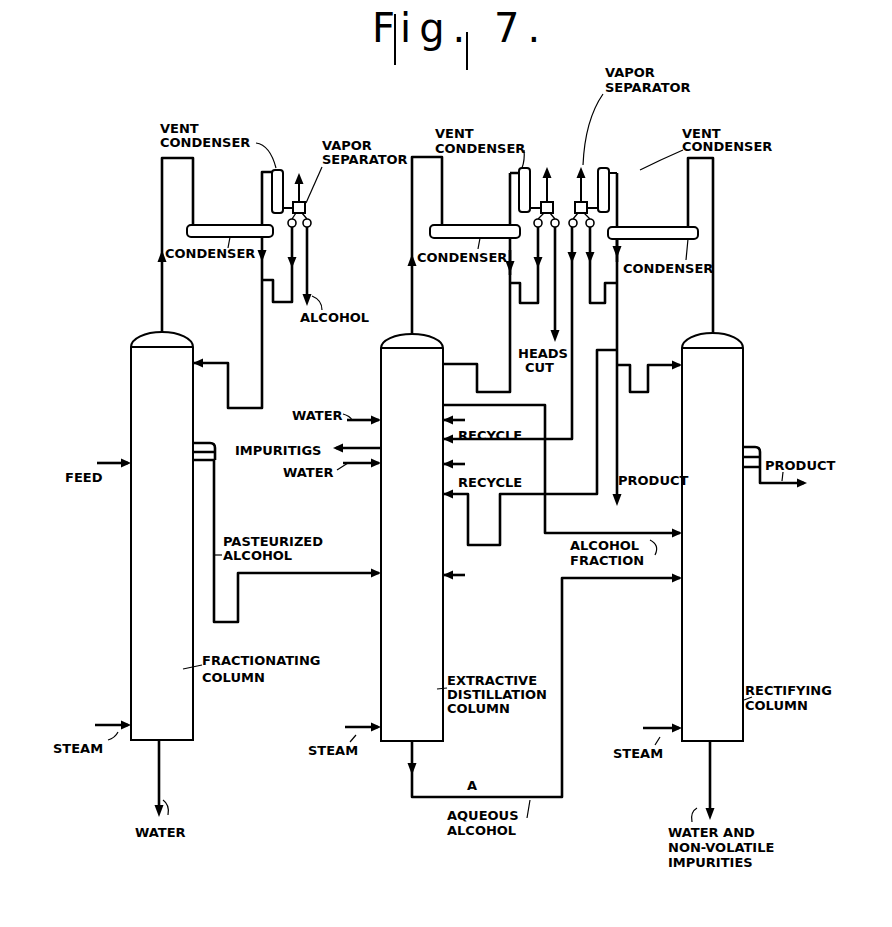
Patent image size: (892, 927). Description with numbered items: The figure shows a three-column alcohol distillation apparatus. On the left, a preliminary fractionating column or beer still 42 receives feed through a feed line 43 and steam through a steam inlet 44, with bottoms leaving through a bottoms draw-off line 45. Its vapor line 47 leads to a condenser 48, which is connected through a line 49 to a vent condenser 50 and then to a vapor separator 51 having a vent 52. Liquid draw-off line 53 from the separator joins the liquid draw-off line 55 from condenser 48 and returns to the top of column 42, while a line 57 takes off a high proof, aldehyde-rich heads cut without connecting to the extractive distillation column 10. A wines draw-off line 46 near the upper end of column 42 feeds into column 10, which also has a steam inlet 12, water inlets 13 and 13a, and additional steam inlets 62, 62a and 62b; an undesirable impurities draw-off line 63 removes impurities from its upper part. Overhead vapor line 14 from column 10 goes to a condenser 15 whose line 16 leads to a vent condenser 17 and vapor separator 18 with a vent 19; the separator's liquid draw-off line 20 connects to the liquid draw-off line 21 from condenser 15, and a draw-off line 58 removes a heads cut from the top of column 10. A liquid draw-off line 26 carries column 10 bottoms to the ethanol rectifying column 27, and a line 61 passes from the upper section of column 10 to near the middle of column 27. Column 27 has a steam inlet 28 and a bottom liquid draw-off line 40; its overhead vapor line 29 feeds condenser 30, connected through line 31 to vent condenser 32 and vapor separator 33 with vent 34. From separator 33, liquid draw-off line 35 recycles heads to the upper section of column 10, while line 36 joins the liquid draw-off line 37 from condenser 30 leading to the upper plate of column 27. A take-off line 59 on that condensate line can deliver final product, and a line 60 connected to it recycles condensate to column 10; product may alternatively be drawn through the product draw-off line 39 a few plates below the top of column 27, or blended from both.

The extractive distillation column 10 is at (443, 632).
The steam inlet 12 is at (355, 727).
The water inlet 13 is at (372, 419).
The water inlet 13a is at (360, 464).
The overhead vapor line 14 is at (413, 293).
The condenser 15 is at (462, 225).
The line 16 is at (510, 190).
The vent condenser 17 is at (530, 168).
The vapor separator 18 is at (556, 200).
The vent 19 is at (549, 180).
The liquid draw-off line 20 is at (525, 262).
The liquid draw-off line 21 is at (516, 290).
The liquid draw-off line 26 is at (421, 791).
The ethanol rectifying column 27 is at (744, 580).
The steam inlet 28 is at (660, 728).
The overhead vapor line 29 is at (715, 282).
The condenser 30 is at (652, 227).
The line 31 is at (618, 195).
The vent condenser 32 is at (608, 172).
The vapor separator 33 is at (590, 202).
The vent 34 is at (584, 180).
The liquid draw-off line 35 is at (573, 331).
The liquid draw-off line 36 is at (598, 270).
The liquid draw-off line 37 is at (612, 283).
The product draw-off line 39 is at (763, 486).
The liquid draw-off line 40 is at (712, 780).
The preliminary fractionating column or beer still 42 is at (131, 543).
The feed line 43 is at (110, 462).
The steam inlet 44 is at (105, 725).
The bottoms draw-off line 45 is at (161, 780).
The wines draw-off line 46 is at (215, 516).
The vapor line 47 is at (164, 302).
The condenser 48 is at (217, 225).
The line 49 is at (262, 190).
The vent condenser 50 is at (282, 172).
The vapor separator 51 is at (306, 207).
The vent 52 is at (303, 180).
The liquid draw-off line 53 is at (279, 264).
The liquid draw-off line 55 is at (262, 292).
The line 57 is at (309, 248).
The draw-off line 58 is at (553, 333).
The take-off line 59 is at (618, 428).
The line 60 is at (570, 494).
The line 61 is at (543, 405).
The steam inlet 62 is at (462, 420).
The steam inlet 62a is at (462, 464).
The steam inlet 62b is at (450, 575).
The undesirable impurities draw-off line 63 is at (345, 448).